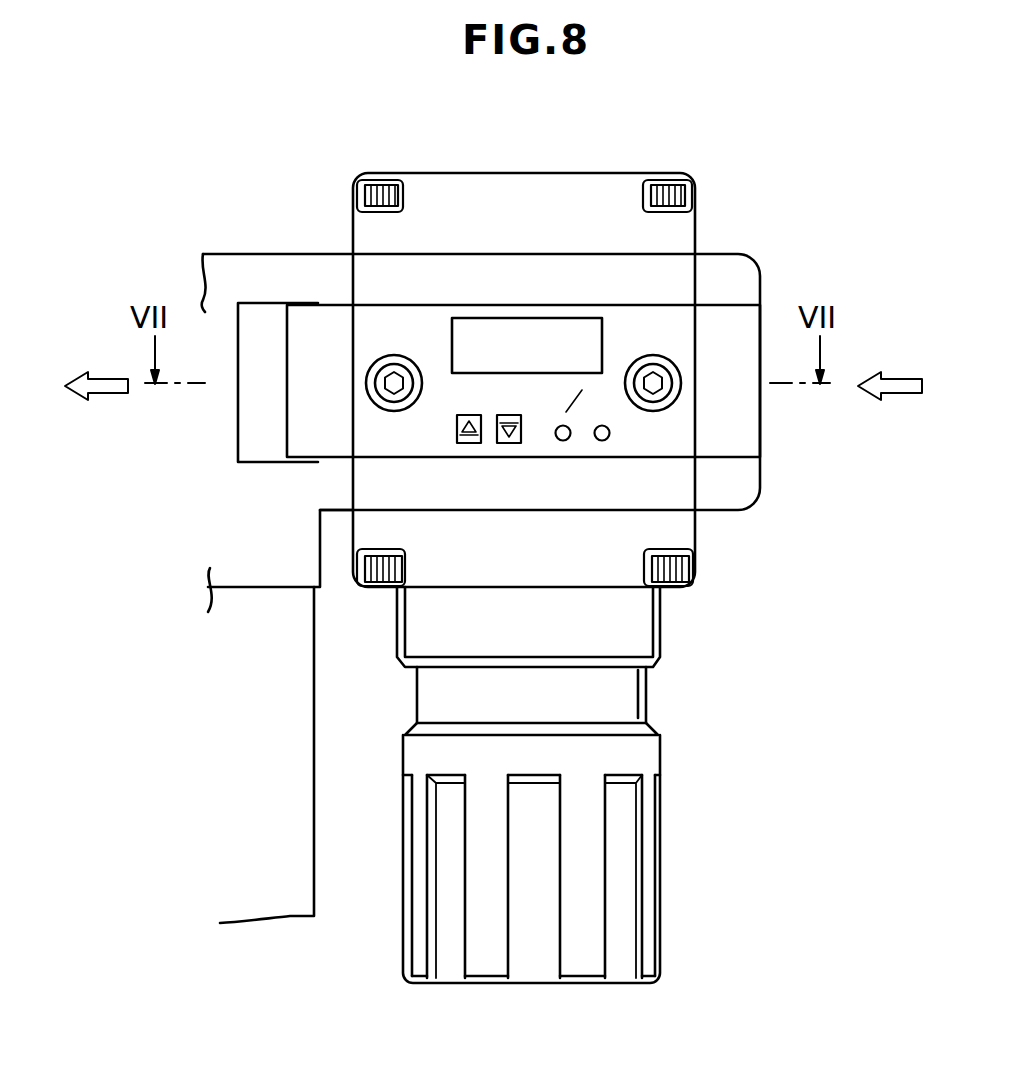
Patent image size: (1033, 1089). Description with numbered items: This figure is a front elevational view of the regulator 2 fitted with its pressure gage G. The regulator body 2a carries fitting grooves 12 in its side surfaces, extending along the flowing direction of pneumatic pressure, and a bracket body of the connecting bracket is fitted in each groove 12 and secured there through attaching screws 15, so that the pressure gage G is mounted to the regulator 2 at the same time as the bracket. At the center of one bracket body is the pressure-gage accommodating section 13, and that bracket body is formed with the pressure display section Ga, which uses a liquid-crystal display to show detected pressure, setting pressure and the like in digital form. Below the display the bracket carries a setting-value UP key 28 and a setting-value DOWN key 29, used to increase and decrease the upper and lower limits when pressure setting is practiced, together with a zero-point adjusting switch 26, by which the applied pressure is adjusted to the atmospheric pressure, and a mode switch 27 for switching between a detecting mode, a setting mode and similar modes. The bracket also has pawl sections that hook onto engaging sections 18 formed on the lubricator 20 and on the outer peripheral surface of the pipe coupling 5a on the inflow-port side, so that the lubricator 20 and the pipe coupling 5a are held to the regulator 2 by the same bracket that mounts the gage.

The regulator 2 is at (705, 194).
The regulator body 2a is at (440, 560).
The pipe coupling 5a is at (717, 268).
The fitting groove 12 is at (676, 457).
The pressure-gage accommodating section 13 is at (600, 346).
The attaching screw 15 is at (665, 378).
The engaging section 18 is at (262, 315).
The lubricator 20 is at (243, 644).
The zero-point adjusting switch 26 is at (568, 439).
The mode switch 27 is at (607, 439).
The setting-value UP key 28 is at (519, 444).
The setting-value DOWN key 29 is at (473, 444).
The pressure gage G is at (496, 306).
The pressure display section Ga is at (578, 332).